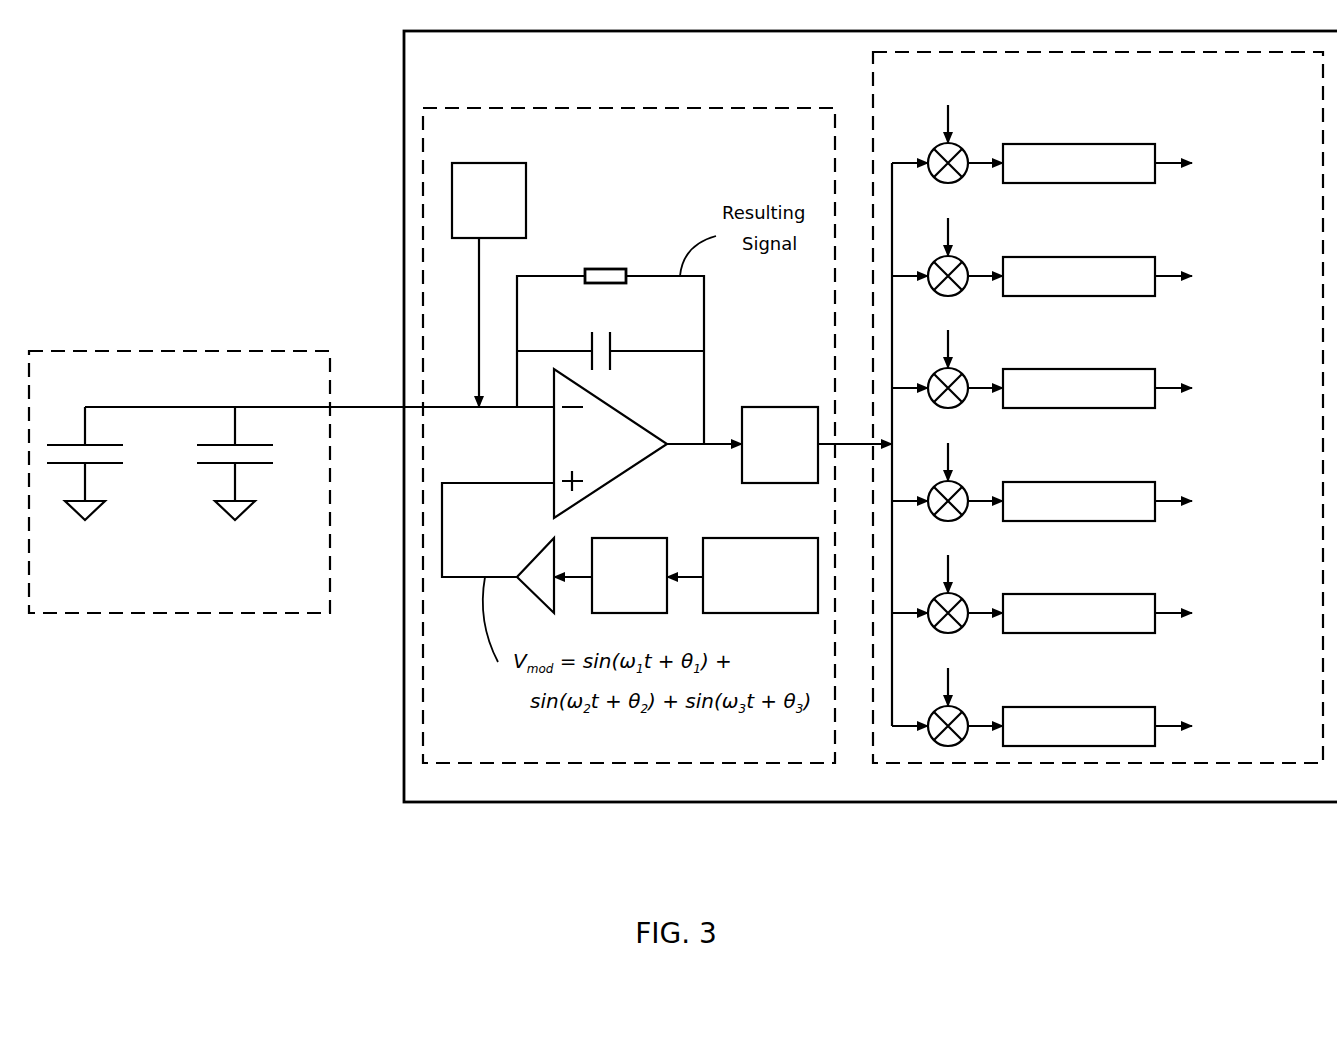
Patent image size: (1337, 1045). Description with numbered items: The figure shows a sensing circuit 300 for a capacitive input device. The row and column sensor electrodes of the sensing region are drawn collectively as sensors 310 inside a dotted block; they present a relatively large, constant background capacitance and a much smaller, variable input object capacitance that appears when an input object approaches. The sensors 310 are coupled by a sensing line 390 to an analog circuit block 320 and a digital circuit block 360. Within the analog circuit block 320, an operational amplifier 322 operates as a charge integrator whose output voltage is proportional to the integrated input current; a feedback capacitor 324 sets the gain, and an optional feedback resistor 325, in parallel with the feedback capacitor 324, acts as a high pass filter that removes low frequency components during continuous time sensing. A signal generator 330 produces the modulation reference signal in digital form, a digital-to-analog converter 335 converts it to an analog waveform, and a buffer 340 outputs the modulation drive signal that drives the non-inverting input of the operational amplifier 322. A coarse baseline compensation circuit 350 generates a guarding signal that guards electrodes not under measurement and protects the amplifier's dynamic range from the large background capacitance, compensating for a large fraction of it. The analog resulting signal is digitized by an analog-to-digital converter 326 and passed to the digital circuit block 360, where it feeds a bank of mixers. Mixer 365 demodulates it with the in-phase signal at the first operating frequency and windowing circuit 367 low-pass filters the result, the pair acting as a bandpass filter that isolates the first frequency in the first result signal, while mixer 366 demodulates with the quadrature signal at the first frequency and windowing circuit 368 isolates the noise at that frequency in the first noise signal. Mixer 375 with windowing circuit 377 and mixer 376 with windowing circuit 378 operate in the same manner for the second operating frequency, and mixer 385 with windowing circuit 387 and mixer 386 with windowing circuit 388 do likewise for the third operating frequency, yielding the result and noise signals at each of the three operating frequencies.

The sensing circuit 300 is at (870, 416).
The sensors 310 is at (179, 482).
The analog circuit block 320 is at (629, 435).
The operational amplifier 322 is at (620, 410).
The feedback capacitor 324 is at (590, 351).
The feedback resistor 325 is at (585, 276).
The analog-to-digital converter 326 is at (748, 407).
The signal generator 330 is at (723, 538).
The digital-to-analog converter 335 is at (618, 538).
The buffer 340 is at (535, 558).
The coarse baseline compensation circuit 350 is at (507, 163).
The digital circuit block 360 is at (1098, 407).
The mixer 365 is at (958, 178).
The mixer 366 is at (958, 291).
The windowing circuit 367 is at (1060, 183).
The windowing circuit 368 is at (1060, 296).
The mixer 375 is at (958, 403).
The mixer 376 is at (958, 516).
The windowing circuit 377 is at (1060, 408).
The windowing circuit 378 is at (1060, 521).
The mixer 385 is at (958, 628).
The mixer 386 is at (960, 712).
The windowing circuit 387 is at (1060, 633).
The windowing circuit 388 is at (1060, 707).
The sensing line 390 is at (353, 407).